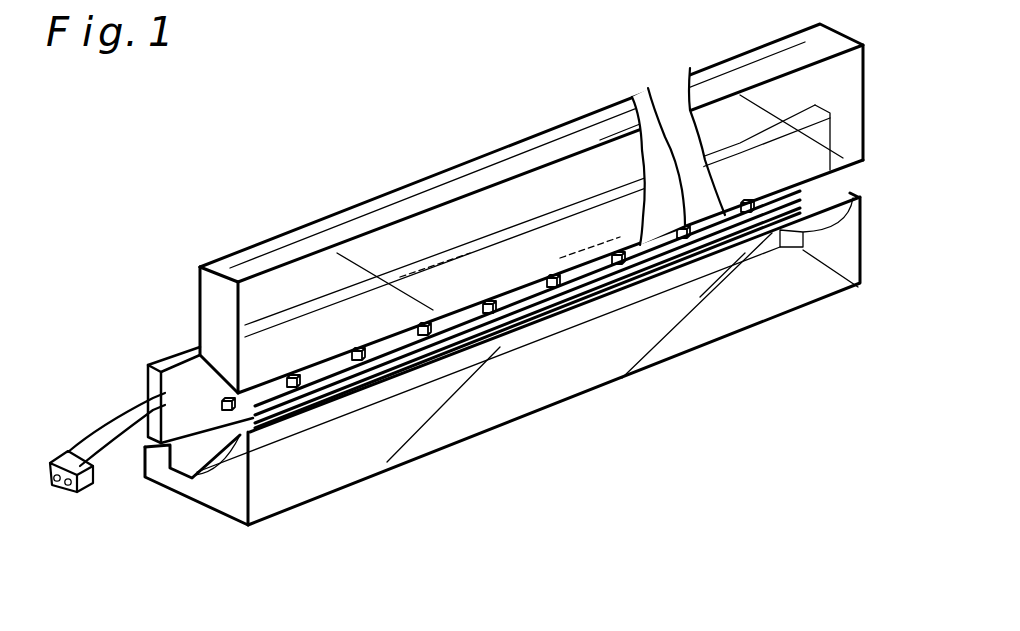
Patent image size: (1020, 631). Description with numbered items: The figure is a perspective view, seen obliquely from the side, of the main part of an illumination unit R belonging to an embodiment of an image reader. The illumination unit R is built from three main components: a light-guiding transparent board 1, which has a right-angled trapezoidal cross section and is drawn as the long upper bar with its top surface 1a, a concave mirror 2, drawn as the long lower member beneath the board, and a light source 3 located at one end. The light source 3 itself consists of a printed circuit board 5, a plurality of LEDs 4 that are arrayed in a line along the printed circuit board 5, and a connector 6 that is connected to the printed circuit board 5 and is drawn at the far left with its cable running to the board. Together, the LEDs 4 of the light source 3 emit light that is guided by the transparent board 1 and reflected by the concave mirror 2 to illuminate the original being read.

The illumination unit R is at (368, 160).
The light-guiding transparent board 1 is at (305, 218).
The top surface of upper block 1a is at (478, 170).
The concave mirror 2 is at (850, 246).
The light source 3 is at (145, 370).
The LEDs 4 is at (649, 88).
The printed circuit board 5 is at (187, 348).
The connector 6 is at (66, 452).